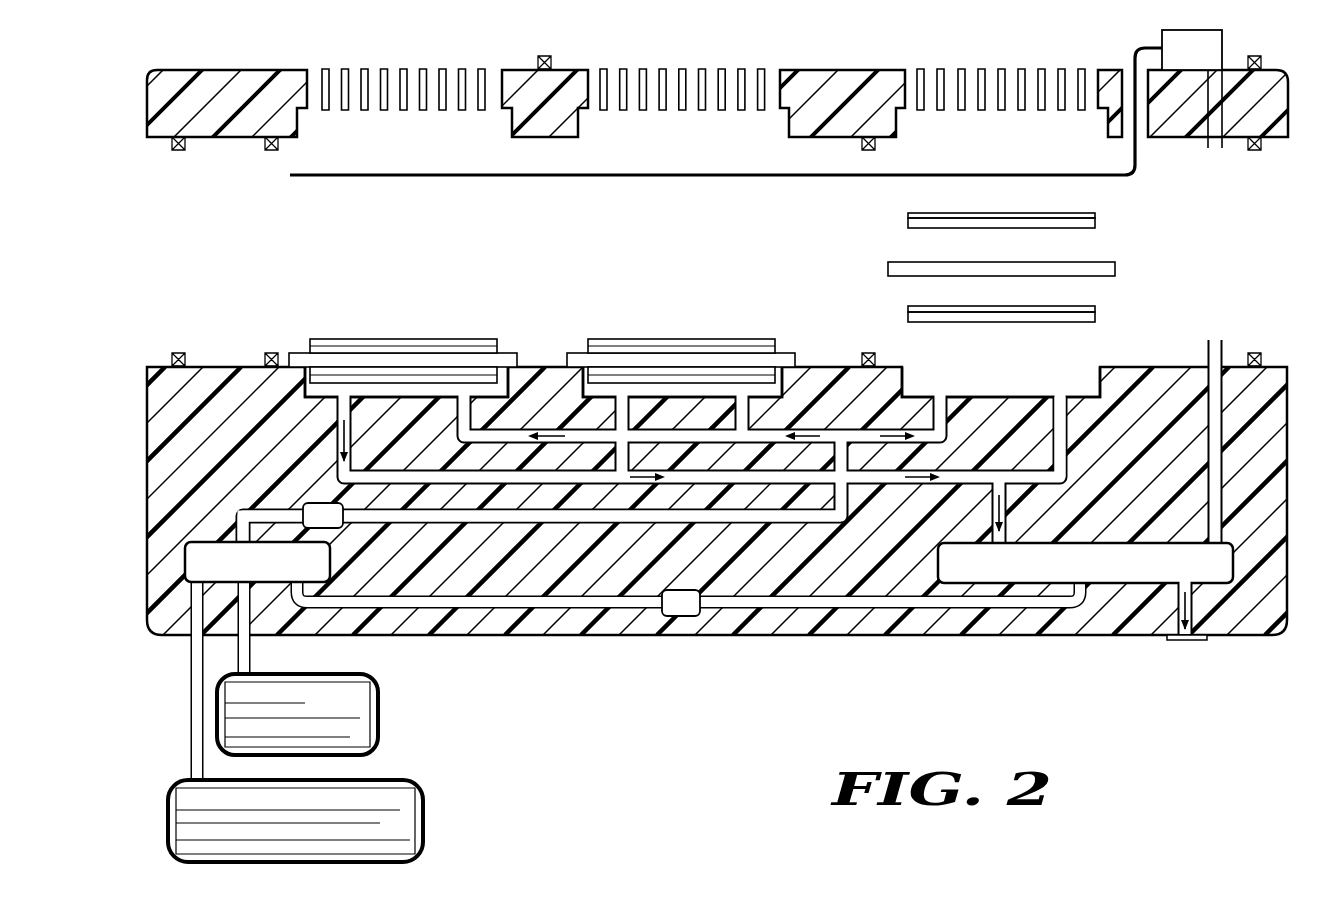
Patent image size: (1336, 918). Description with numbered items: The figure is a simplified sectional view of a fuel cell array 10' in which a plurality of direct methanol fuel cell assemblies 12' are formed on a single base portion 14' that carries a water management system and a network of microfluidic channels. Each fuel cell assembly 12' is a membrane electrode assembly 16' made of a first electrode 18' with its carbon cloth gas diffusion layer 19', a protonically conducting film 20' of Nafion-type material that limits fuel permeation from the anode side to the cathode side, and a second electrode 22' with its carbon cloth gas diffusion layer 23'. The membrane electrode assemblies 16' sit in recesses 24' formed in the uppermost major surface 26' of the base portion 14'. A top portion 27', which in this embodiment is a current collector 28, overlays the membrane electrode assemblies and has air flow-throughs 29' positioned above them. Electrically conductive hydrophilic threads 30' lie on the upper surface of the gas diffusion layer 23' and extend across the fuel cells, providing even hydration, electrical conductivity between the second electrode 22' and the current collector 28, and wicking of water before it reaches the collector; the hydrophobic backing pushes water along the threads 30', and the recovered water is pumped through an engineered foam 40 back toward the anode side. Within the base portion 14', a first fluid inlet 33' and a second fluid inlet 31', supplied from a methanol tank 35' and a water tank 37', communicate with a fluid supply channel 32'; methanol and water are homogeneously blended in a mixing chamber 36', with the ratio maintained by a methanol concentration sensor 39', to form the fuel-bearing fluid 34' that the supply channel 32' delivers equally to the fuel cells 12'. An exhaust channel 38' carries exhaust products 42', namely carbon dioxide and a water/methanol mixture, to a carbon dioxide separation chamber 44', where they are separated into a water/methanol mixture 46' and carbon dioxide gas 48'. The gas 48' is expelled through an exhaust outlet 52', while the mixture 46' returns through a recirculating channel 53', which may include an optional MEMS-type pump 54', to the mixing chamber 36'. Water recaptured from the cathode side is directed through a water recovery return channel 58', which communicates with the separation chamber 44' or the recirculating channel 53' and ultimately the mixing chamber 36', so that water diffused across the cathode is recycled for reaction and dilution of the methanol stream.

The fuel cell array 10' is at (668, 443).
The fuel cell assembly 12' is at (774, 285).
The base portion 14' is at (668, 466).
The fuel cell membrane electrode assembly 16' is at (728, 270).
The first electrode 18' is at (1029, 306).
The gas diffusion layer 19' is at (1029, 329).
The film 20' is at (1029, 267).
The second electrode 22' is at (1030, 228).
The gas diffusion layer 23' is at (1030, 202).
The recesses 24' is at (702, 349).
The uppermost major surface 26' is at (716, 345).
The top portion 27' is at (709, 123).
The current collector 28 is at (1288, 114).
The air flow-throughs 29' is at (703, 68).
The electrically conductive hydrophilic threads 30' is at (726, 135).
The second fluid inlet 31' is at (276, 630).
The fluid supply channel 32' is at (265, 506).
The first fluid inlet 33' is at (165, 683).
The fuel-bearing fluid 34' is at (592, 536).
The methanol tank 35' is at (324, 821).
The mixing chamber 36' is at (257, 562).
The water tank 37' is at (325, 714).
The exhaust channel 38' is at (1017, 437).
The methanol concentration sensor 39' is at (319, 497).
The engineered foam 40 is at (1222, 41).
The exhaust products 42' is at (646, 475).
The carbon dioxide separation chamber 44' is at (1085, 563).
The water/methanol mixture 46' is at (985, 636).
The carbon dioxide gas 48' is at (1217, 631).
The exhaust outlet 52' is at (1188, 658).
The recirculating channel 53' is at (688, 627).
The pump 54' is at (676, 632).
The water recovery return channel 58' is at (1218, 306).